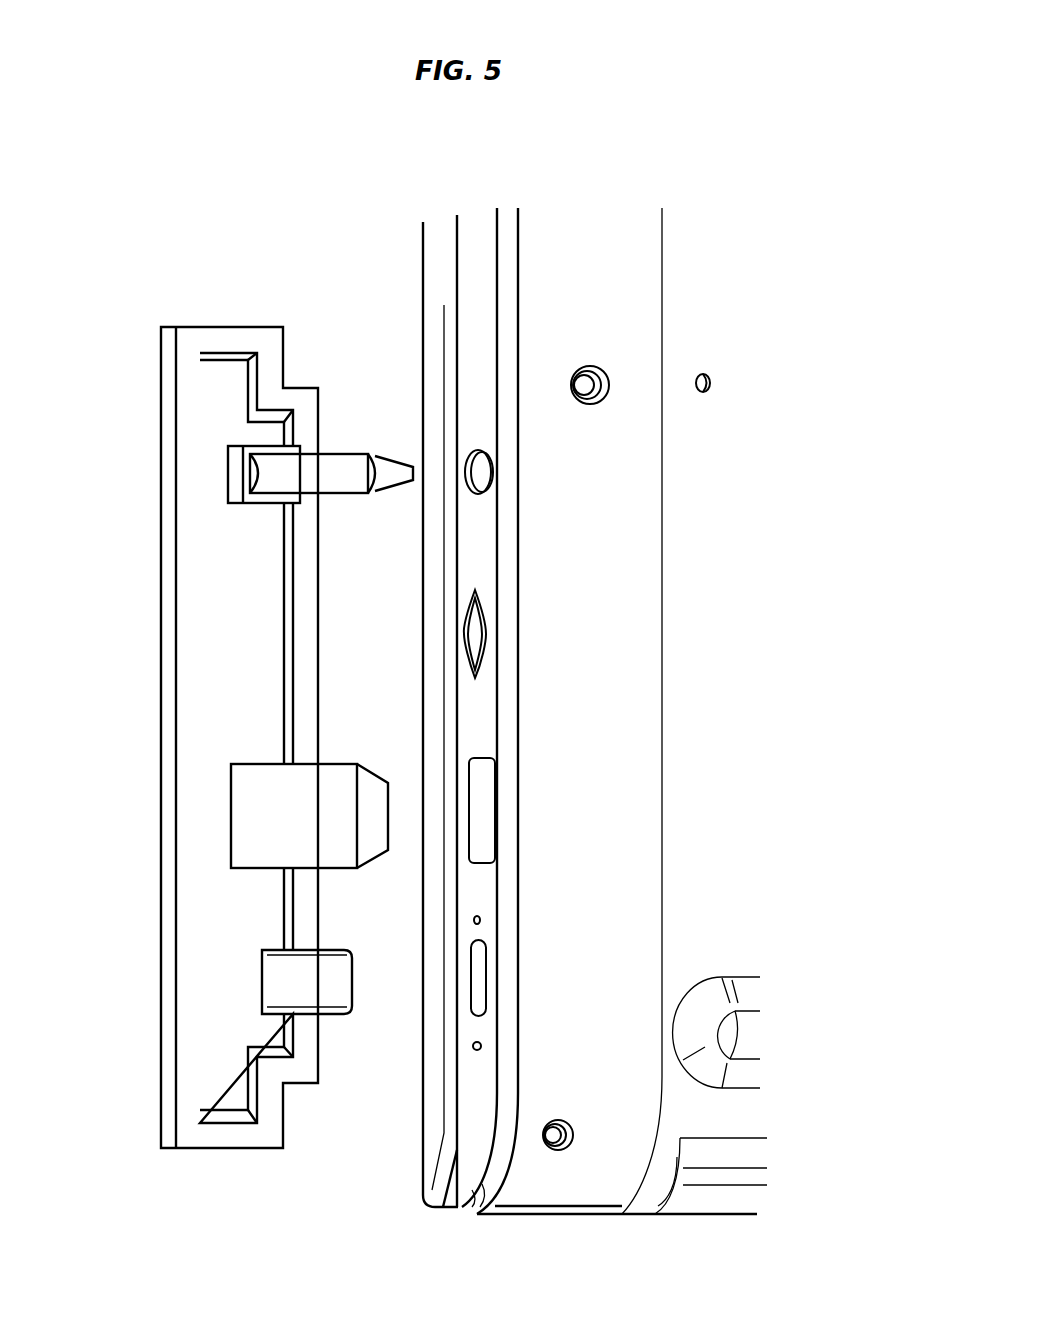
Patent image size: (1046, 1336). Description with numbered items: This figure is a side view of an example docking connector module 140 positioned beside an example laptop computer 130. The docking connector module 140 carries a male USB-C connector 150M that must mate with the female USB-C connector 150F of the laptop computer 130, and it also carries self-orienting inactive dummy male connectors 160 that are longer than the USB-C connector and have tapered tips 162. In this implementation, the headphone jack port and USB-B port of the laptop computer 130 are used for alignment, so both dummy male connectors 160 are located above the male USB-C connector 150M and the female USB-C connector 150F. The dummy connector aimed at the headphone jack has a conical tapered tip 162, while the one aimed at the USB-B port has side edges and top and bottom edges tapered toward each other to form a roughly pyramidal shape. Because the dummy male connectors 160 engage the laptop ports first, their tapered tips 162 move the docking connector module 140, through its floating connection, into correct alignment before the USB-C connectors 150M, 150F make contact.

The laptop computer 130 is at (728, 179).
The docking connector module 140 is at (173, 325).
The self-orienting inactive dummy male connector 160 is at (355, 448).
The tapered tip 162 is at (392, 457).
The male USB-C connector 150M is at (333, 1018).
The female USB-C connector 150F is at (493, 929).